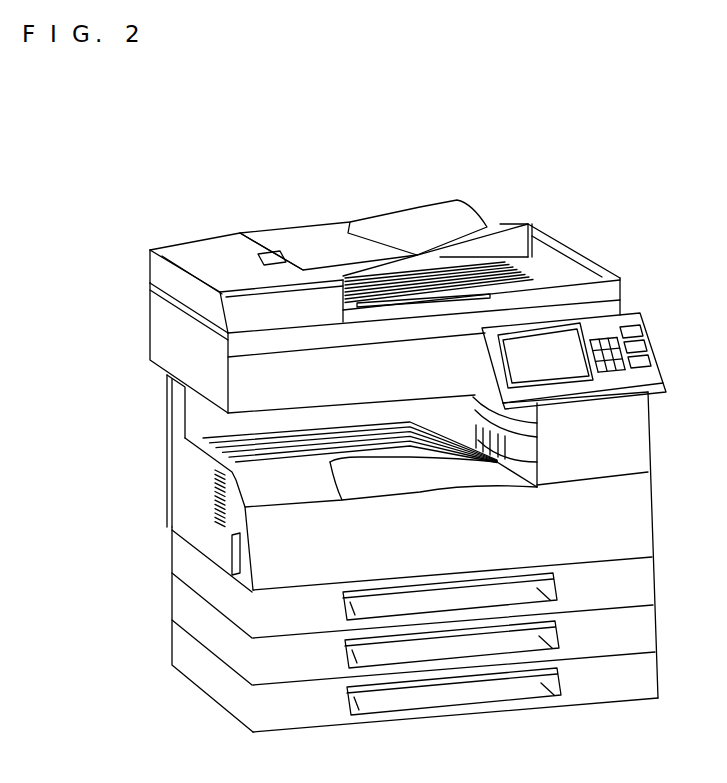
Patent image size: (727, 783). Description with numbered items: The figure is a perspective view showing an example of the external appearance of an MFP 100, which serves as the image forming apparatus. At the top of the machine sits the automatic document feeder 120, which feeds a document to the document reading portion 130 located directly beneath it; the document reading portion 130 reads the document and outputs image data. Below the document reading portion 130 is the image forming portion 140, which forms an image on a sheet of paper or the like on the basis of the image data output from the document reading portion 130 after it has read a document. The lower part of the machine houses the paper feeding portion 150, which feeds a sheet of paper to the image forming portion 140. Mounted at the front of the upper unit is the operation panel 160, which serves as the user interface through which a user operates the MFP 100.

The MFP 100 is at (160, 122).
The automatic document feeder 120 is at (211, 241).
The document reading portion 130 is at (156, 343).
The image forming portion 140 is at (174, 468).
The paper feeding portion 150 is at (158, 522).
The operation panel 160 is at (565, 352).